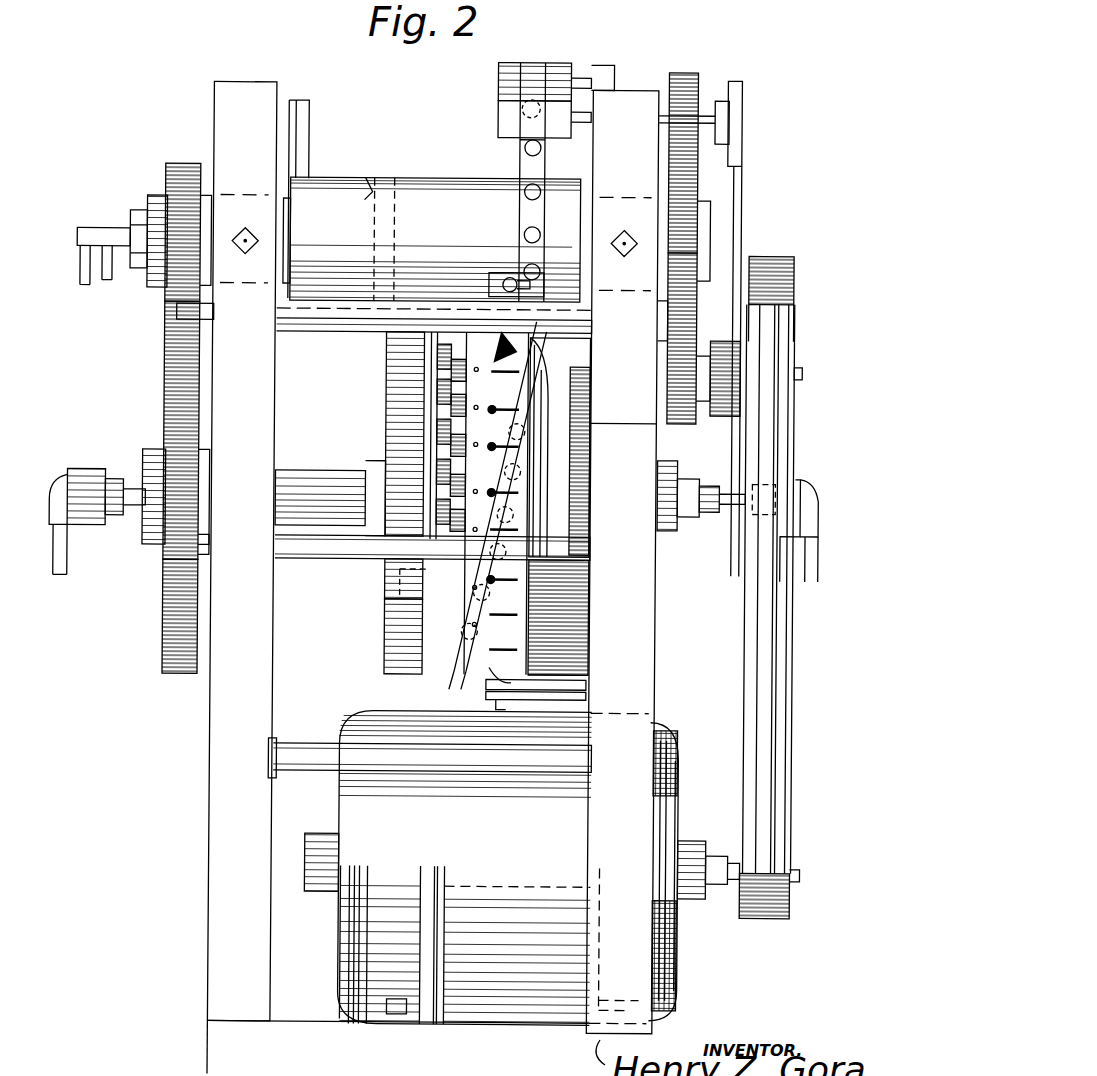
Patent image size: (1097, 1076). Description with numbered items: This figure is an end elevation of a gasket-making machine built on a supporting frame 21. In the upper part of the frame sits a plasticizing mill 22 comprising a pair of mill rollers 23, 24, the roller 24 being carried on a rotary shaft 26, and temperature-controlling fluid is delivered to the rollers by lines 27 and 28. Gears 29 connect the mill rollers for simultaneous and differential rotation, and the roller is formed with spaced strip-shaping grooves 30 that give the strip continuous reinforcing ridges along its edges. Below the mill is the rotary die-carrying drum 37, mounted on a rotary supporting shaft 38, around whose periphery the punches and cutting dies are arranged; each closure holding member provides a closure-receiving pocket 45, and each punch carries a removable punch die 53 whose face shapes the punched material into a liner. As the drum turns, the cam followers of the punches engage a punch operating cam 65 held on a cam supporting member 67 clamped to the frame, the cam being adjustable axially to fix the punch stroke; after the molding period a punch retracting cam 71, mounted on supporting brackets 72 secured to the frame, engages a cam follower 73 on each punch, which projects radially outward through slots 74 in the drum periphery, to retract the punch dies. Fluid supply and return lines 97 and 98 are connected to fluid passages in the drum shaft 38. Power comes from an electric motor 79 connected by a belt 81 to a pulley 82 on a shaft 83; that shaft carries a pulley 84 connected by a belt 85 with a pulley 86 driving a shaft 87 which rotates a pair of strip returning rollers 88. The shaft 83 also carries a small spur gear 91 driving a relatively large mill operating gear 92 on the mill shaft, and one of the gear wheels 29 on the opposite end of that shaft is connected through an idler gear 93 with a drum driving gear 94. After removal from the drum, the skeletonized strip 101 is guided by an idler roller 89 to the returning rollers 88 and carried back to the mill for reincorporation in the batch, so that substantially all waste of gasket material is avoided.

The supporting frame 21 is at (211, 860).
The plasticizing mill 22 is at (354, 177).
The mill roller 23 is at (378, 186).
The mill roller 24 is at (400, 215).
The rotary shaft 26 is at (205, 232).
The fluid line 27 is at (86, 288).
The fluid line 28 is at (105, 283).
The gears 29 is at (183, 168).
The strip-shaping grooves 30 is at (378, 197).
The rotary die-carrying drum 37 is at (388, 668).
The rotary supporting shaft 38 is at (340, 486).
The closure-receiving pocket 45 is at (432, 413).
The punch die 53 is at (440, 448).
The punch operating cam 65 is at (548, 468).
The cam supporting member 67 is at (592, 590).
The punch retracting cam 71 is at (476, 682).
The supporting brackets 72 is at (552, 700).
The cam follower 73 is at (490, 490).
The slots 74 is at (498, 402).
The electric motor 79 is at (360, 932).
The belt 81 is at (745, 680).
The pulley 82 is at (792, 303).
The shaft 83 is at (801, 372).
The pulley 84 is at (733, 418).
The belt 85 is at (739, 197).
The pulley 86 is at (740, 88).
The shaft 87 is at (666, 128).
The strip returning rollers 88 is at (508, 118).
The idler roller 89 is at (388, 594).
The small spur gear 91 is at (686, 424).
The mill operating gear 92 is at (690, 74).
The idler gear 93 is at (165, 368).
The drum driving gear 94 is at (165, 622).
The fluid supply line 97 is at (68, 562).
The fluid return line 98 is at (815, 580).
The skeletonized strip 101 is at (517, 160).